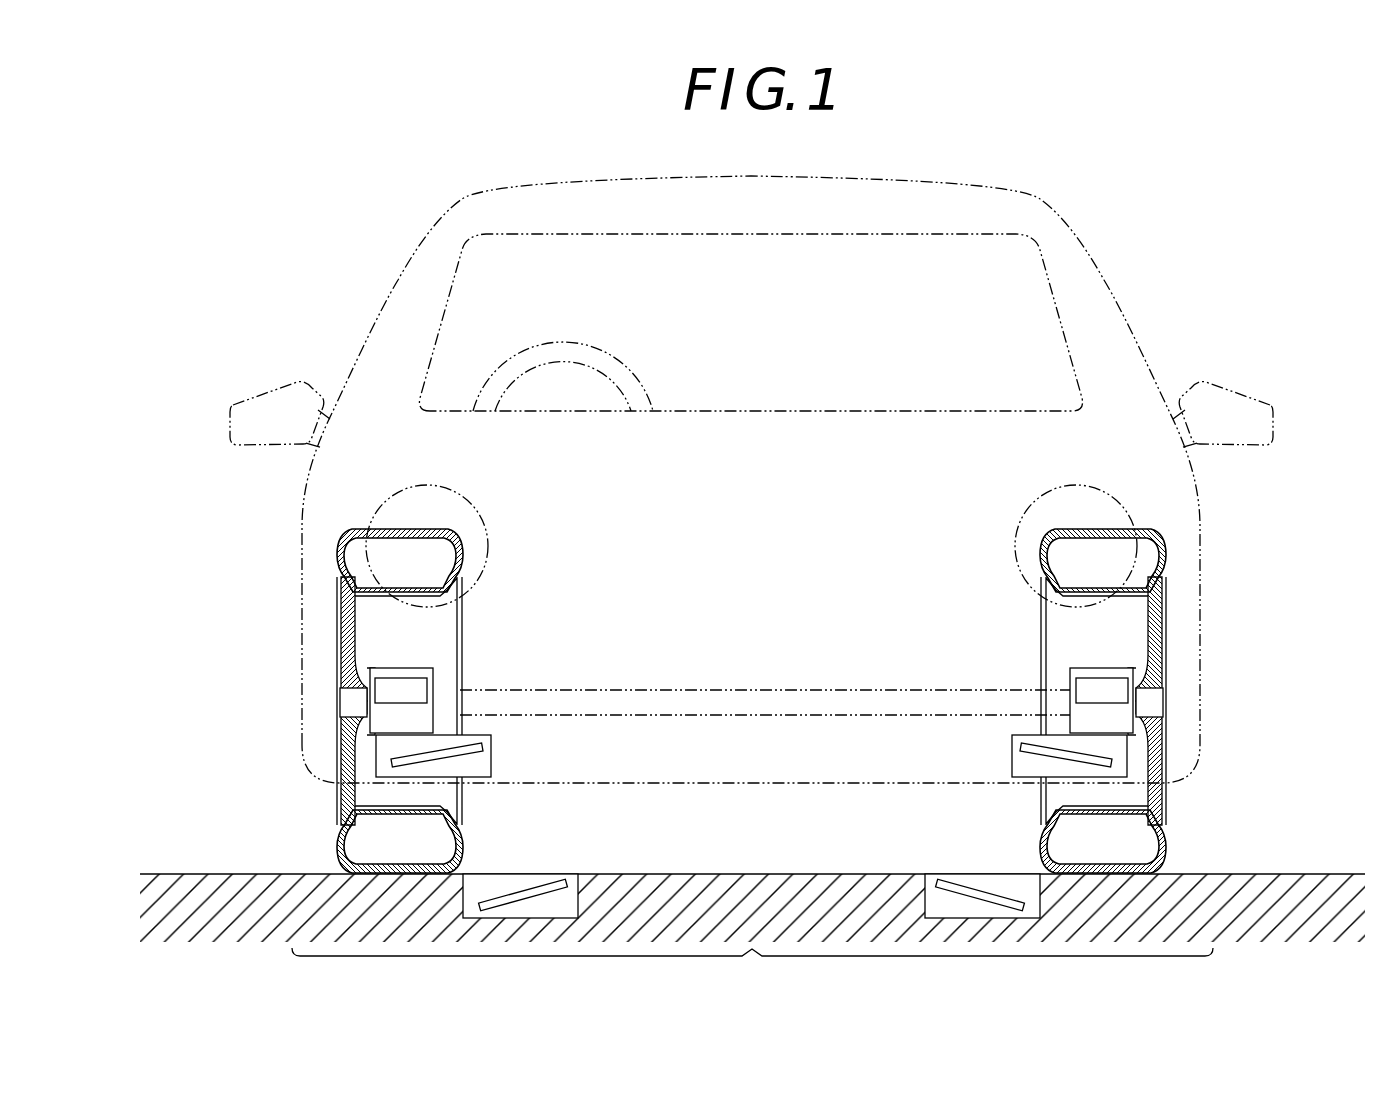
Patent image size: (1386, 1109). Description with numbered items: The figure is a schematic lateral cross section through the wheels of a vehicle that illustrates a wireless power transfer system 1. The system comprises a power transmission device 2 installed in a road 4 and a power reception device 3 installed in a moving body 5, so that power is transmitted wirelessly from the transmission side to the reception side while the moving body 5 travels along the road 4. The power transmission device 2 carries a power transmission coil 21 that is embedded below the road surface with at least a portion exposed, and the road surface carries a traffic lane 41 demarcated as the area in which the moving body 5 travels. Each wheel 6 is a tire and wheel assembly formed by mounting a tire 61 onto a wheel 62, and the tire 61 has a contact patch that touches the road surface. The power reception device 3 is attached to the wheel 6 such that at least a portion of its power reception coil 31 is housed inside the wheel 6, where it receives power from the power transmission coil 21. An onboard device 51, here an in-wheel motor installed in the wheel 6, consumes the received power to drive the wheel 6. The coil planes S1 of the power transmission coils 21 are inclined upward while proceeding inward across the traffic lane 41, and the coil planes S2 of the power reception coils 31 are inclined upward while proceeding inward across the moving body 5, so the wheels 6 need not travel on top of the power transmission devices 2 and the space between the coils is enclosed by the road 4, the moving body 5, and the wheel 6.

The wireless power transfer system 1 is at (1192, 197).
The power transmission device 2 is at (551, 869).
The power transmission coil 21 is at (521, 897).
The power reception device 3 is at (498, 745).
The power reception coil 31 is at (432, 753).
The road 4 is at (1246, 873).
The traffic lane 41 is at (752, 970).
The moving body 5 is at (942, 196).
The onboard device 51 is at (399, 688).
The wheel 6 is at (322, 683).
The tire 61 is at (334, 553).
The wheel 62 is at (338, 626).
The coil plane S1 is at (495, 898).
The coil plane S2 is at (458, 755).